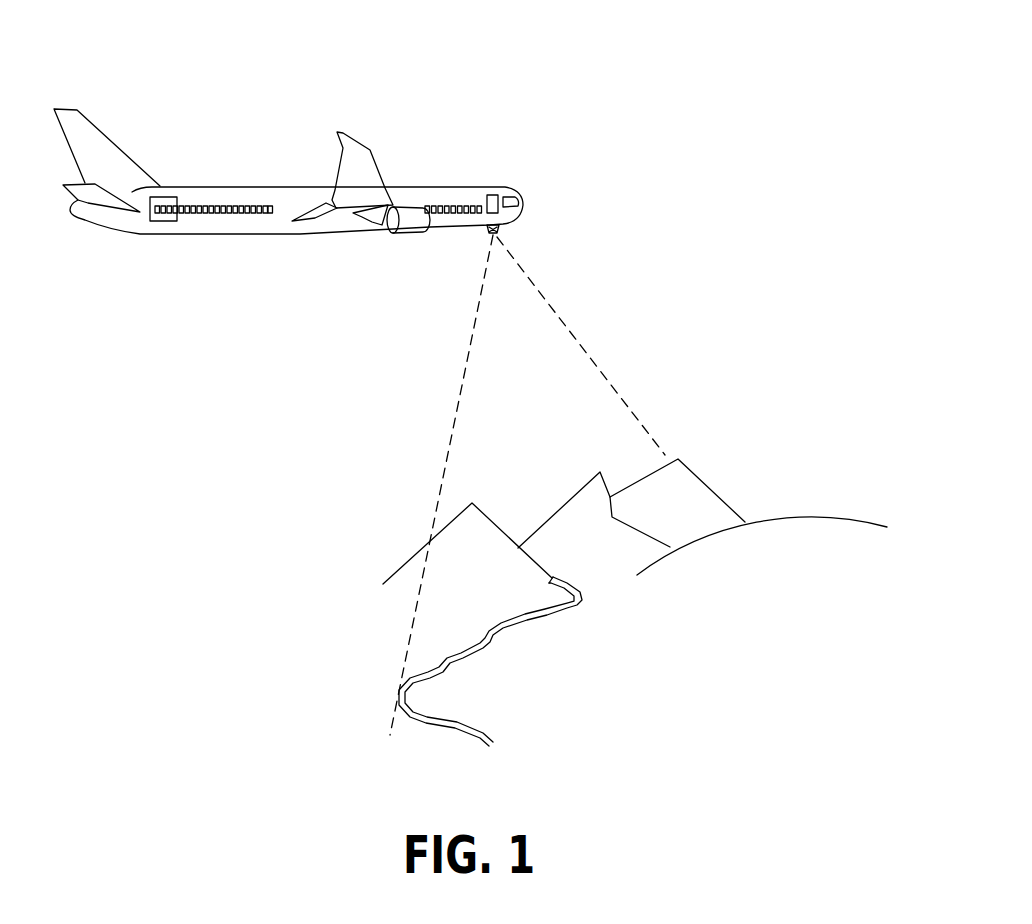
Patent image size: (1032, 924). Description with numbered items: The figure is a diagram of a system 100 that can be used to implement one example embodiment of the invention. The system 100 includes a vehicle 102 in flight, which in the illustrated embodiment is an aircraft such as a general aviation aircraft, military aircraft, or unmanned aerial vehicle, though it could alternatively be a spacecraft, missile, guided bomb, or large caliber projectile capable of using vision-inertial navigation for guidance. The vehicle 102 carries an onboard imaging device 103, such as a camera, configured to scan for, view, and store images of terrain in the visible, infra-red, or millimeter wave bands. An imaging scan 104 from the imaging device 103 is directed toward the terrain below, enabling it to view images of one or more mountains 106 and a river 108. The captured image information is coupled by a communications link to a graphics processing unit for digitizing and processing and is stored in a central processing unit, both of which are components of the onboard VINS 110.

The system 100 is at (757, 98).
The vehicle 102 is at (395, 186).
The imaging device 103 is at (600, 187).
The imaging scan 104 is at (598, 365).
The mountains 106 is at (558, 512).
The river 108 is at (537, 625).
The VINS 110 is at (173, 195).